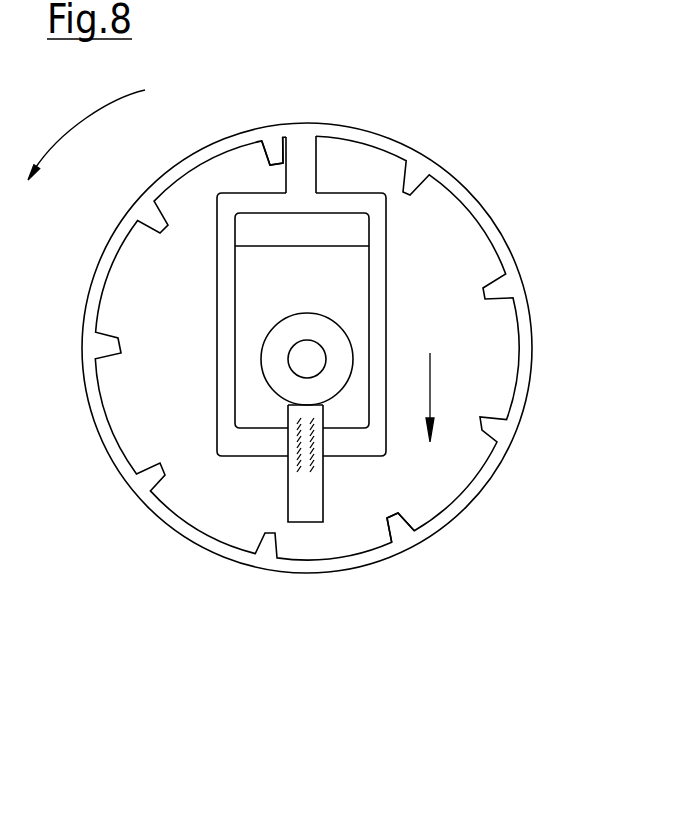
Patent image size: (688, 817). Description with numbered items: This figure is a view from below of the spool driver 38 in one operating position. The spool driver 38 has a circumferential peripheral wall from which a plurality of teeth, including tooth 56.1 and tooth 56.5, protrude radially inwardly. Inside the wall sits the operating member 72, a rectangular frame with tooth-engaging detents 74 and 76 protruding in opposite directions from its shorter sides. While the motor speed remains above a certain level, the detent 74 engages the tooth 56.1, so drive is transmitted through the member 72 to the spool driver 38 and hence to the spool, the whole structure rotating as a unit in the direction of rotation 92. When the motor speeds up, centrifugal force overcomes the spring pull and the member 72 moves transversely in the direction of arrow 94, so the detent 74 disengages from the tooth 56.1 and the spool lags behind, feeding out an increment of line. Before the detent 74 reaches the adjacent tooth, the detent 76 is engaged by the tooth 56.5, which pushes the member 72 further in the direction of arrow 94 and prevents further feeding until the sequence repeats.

The spool driver 38 is at (496, 220).
The tooth 56.1 is at (272, 150).
The tooth 56.5 is at (402, 530).
The operating member 72 is at (383, 337).
The detent 74 is at (303, 162).
The detent 76 is at (302, 507).
The direction of rotation 92 is at (84, 118).
The arrow 94 is at (435, 388).